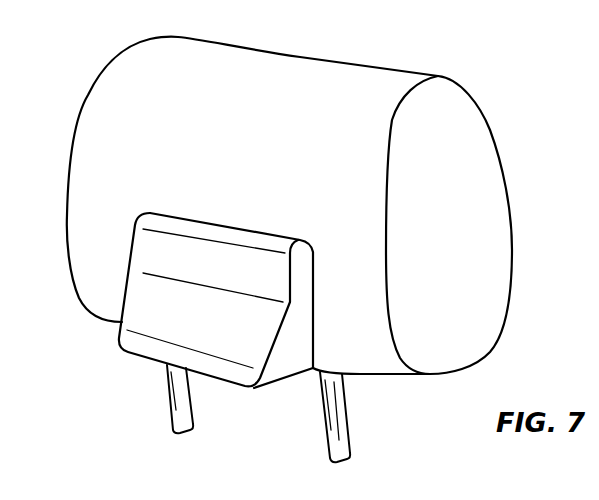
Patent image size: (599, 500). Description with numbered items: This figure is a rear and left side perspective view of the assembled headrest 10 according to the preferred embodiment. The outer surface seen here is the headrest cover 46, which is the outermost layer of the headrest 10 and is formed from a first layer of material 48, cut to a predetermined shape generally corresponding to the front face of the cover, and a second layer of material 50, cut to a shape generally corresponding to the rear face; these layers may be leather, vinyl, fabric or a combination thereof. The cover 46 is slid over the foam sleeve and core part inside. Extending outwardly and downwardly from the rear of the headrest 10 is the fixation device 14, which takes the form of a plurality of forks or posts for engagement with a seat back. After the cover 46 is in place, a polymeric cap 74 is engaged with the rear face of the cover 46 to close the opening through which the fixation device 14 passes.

The headrest 10 is at (290, 240).
The fixation device 14 is at (192, 392).
The headrest cover 46 is at (347, 60).
The first layer of material 48 is at (498, 168).
The second layer of material 50 is at (93, 137).
The polymeric cap 74 is at (140, 348).